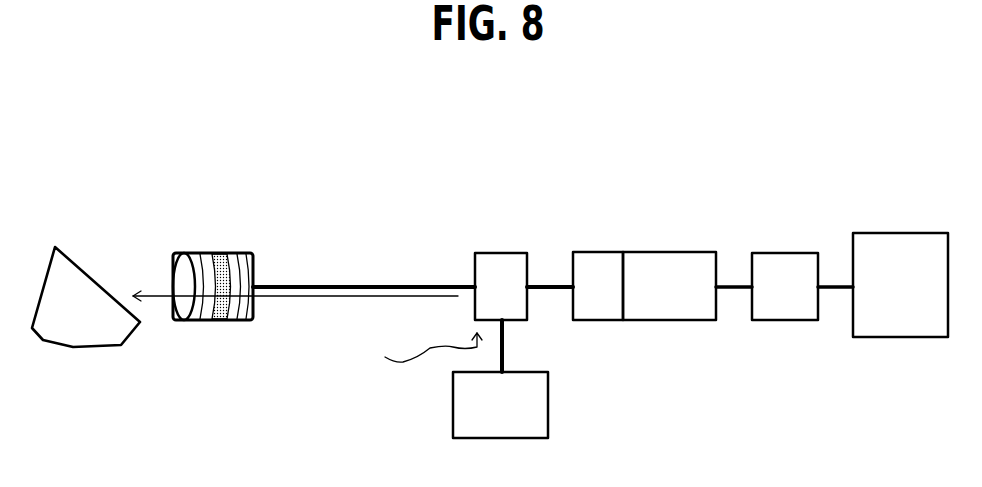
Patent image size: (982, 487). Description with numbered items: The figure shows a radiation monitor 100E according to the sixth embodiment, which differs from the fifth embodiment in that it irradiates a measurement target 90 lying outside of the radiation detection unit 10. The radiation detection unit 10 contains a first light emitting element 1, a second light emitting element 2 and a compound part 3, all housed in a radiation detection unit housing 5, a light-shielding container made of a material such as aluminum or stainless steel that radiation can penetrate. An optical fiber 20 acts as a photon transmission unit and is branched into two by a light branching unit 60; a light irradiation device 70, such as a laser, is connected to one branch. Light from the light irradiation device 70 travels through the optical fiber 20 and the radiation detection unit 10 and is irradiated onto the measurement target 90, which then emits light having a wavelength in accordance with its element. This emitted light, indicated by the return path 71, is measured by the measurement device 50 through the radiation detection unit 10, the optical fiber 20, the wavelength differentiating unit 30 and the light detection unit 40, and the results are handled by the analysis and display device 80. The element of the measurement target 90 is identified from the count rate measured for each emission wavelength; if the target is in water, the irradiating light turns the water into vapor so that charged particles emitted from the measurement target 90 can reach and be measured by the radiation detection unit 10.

The first light emitting element 1 is at (193, 258).
The second light emitting element 2 is at (233, 308).
The compound part 3 is at (222, 257).
The radiation detection unit housing 5 is at (253, 263).
The radiation detection unit 10 is at (219, 262).
The optical fiber 20 is at (342, 283).
The wavelength differentiating unit 30 is at (598, 250).
The light detection unit 40 is at (668, 250).
The measurement device 50 is at (787, 250).
The light branching unit 60 is at (503, 252).
The light irradiation device 70 is at (550, 402).
The return light 71 is at (435, 297).
The analysis and display device 80 is at (898, 233).
The measurement target 90 is at (90, 337).
The radiation monitor 100E is at (552, 152).